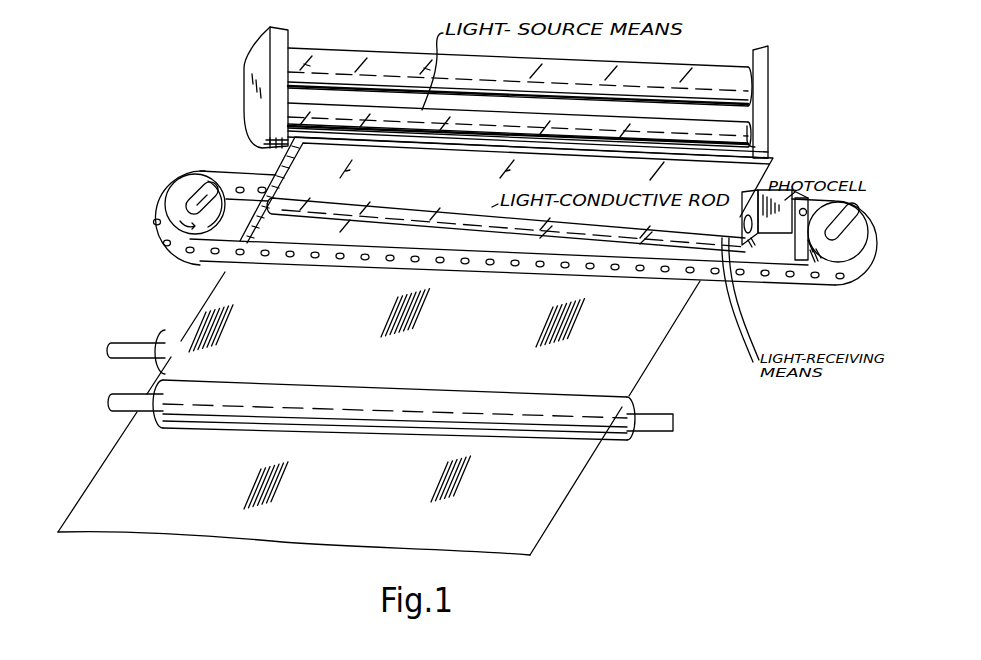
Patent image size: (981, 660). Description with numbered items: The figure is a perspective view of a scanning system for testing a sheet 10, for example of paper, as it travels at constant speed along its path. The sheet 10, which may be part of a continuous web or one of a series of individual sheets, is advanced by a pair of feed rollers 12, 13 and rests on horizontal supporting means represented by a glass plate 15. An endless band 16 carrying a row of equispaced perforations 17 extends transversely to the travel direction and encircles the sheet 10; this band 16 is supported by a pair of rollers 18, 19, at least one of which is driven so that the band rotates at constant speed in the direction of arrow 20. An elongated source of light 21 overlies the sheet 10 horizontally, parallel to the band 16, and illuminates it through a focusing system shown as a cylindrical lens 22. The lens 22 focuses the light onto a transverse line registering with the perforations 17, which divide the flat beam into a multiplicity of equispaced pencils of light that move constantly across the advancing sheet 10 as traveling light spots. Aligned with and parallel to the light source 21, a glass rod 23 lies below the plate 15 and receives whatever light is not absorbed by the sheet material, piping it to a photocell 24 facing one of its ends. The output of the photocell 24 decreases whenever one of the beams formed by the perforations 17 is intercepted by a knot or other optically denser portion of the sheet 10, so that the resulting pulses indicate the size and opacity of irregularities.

The sheet 10 is at (658, 327).
The feed roller 12 is at (174, 428).
The feed roller 13 is at (160, 326).
The glass plate 15 is at (767, 174).
The endless band 16 is at (217, 172).
The perforations 17 is at (163, 254).
The roller 18 is at (183, 200).
The roller 19 is at (840, 250).
The arrow 20 is at (217, 222).
The source of light 21 is at (416, 62).
The cylindrical lens 22 is at (746, 128).
The glass rod 23 is at (471, 210).
The photocell 24 is at (773, 232).